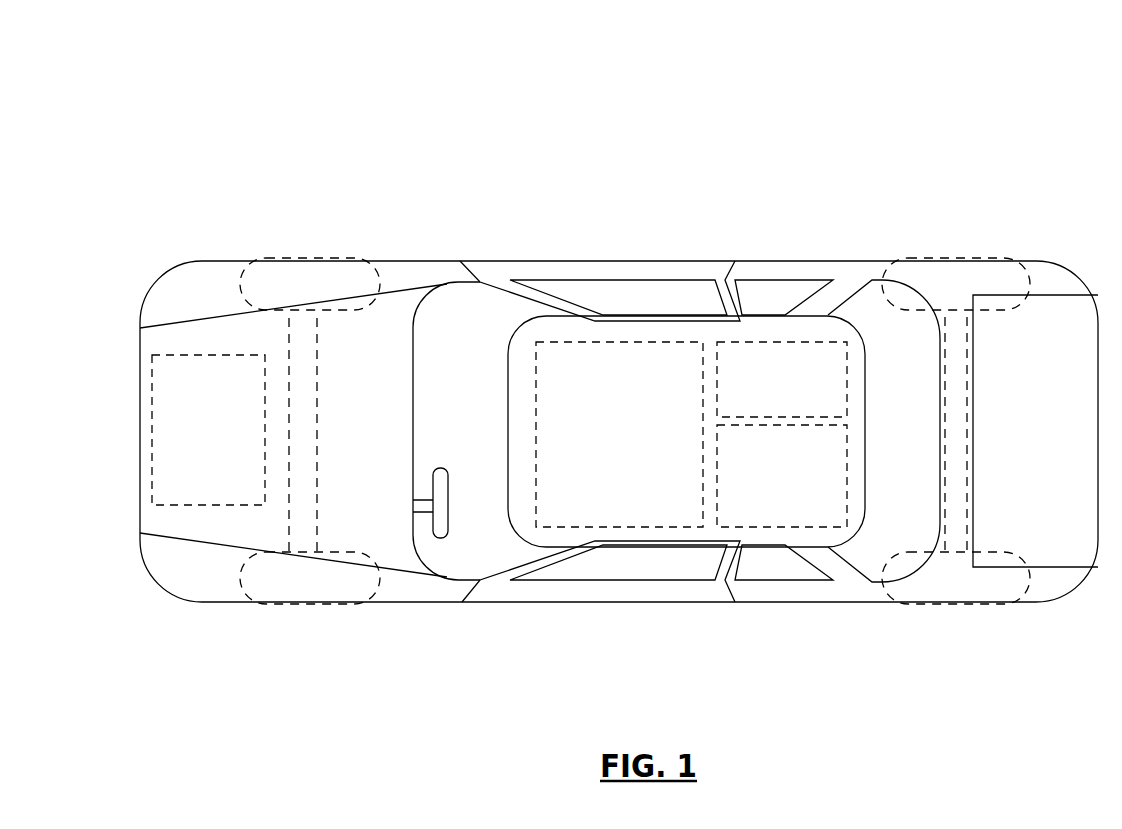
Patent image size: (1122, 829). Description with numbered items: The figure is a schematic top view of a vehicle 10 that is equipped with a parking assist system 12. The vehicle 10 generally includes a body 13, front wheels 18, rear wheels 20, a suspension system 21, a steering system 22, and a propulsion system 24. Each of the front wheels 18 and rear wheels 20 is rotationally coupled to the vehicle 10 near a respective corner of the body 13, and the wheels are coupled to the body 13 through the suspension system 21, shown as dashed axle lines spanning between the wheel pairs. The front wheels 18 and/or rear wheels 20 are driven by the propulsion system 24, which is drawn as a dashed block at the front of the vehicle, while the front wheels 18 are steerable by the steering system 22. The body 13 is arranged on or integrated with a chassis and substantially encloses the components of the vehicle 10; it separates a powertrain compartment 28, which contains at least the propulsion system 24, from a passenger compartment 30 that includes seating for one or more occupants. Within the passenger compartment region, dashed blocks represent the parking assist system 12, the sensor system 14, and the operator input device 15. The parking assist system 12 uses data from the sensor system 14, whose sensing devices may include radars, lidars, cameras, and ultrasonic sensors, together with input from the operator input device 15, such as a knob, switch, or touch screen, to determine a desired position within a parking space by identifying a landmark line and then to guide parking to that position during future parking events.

The vehicle 10 is at (641, 152).
The parking assist system 12 is at (608, 445).
The body 13 is at (502, 283).
The sensor system 14 is at (770, 389).
The operator input device 15 is at (771, 485).
The front wheels 18 is at (310, 260).
The rear wheels 20 is at (935, 261).
The suspension system 21 is at (292, 441).
The steering system 22 is at (437, 468).
The propulsion system 24 is at (196, 441).
The powertrain compartment 28 is at (199, 338).
The passenger compartment 30 is at (760, 338).